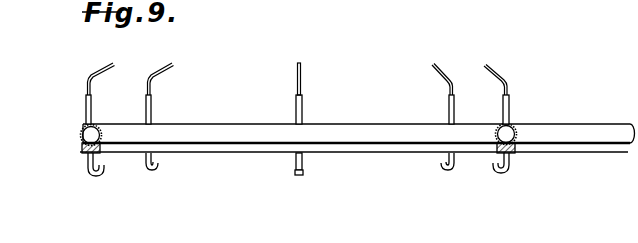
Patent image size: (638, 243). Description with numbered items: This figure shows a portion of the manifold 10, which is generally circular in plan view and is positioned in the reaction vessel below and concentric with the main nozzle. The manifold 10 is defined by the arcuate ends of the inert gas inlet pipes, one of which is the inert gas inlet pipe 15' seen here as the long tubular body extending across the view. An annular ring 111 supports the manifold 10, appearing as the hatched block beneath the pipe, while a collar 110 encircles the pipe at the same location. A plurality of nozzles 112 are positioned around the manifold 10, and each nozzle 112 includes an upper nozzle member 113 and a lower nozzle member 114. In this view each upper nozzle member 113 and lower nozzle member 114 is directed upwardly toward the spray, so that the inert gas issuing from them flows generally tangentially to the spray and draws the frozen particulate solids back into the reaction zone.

The manifold 10 is at (244, 106).
The inert gas inlet pipe 15' is at (359, 149).
The collar 110 is at (81, 137).
The annular ring 111 is at (83, 152).
The nozzle 112 is at (146, 109).
The upper nozzle member 113 is at (114, 75).
The lower nozzle member 114 is at (157, 167).